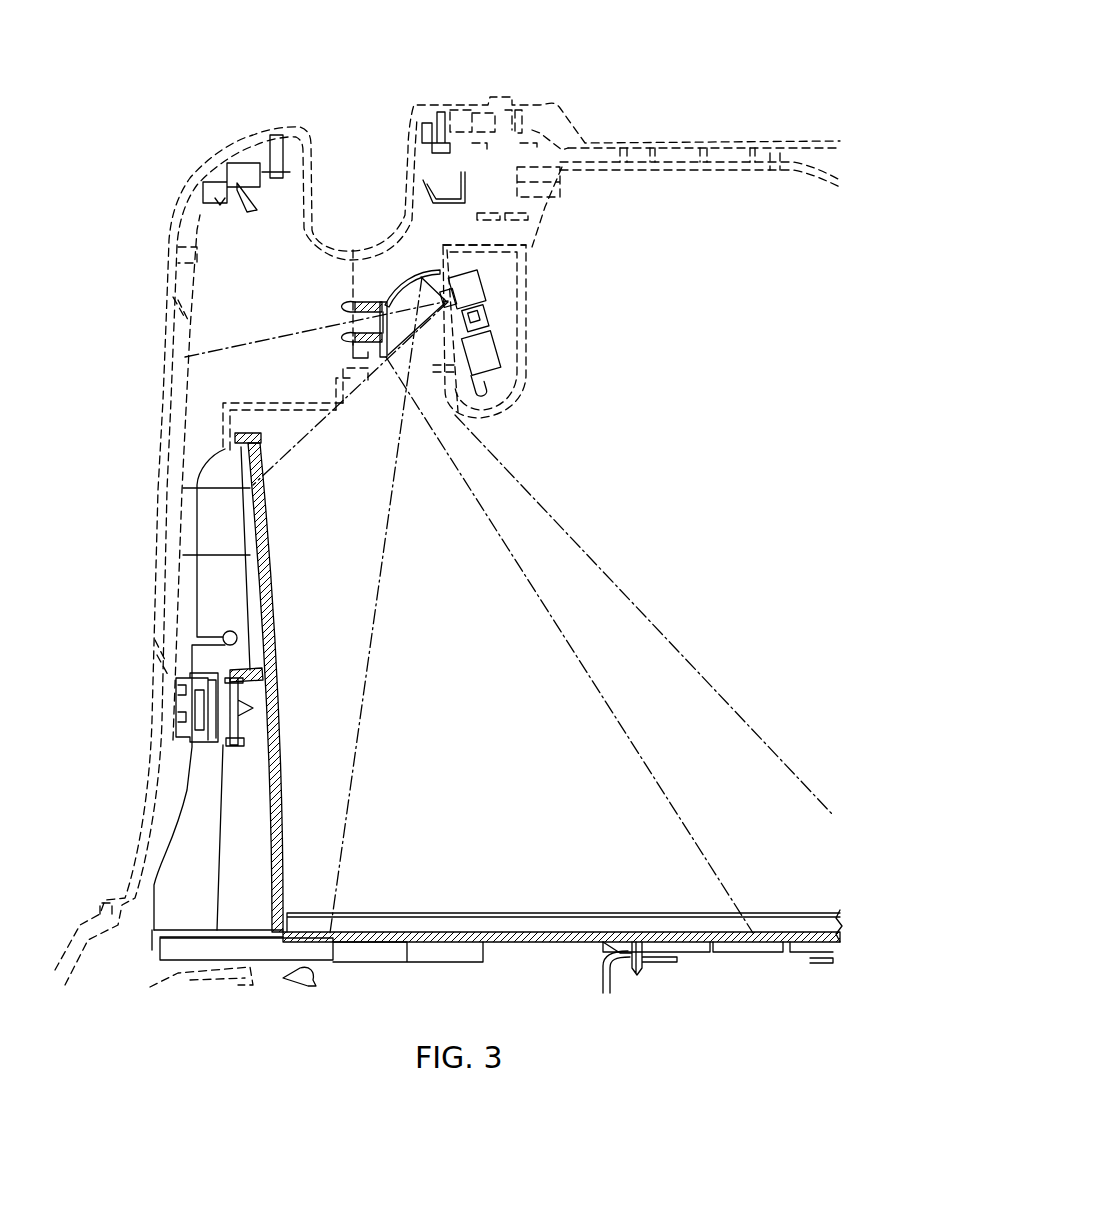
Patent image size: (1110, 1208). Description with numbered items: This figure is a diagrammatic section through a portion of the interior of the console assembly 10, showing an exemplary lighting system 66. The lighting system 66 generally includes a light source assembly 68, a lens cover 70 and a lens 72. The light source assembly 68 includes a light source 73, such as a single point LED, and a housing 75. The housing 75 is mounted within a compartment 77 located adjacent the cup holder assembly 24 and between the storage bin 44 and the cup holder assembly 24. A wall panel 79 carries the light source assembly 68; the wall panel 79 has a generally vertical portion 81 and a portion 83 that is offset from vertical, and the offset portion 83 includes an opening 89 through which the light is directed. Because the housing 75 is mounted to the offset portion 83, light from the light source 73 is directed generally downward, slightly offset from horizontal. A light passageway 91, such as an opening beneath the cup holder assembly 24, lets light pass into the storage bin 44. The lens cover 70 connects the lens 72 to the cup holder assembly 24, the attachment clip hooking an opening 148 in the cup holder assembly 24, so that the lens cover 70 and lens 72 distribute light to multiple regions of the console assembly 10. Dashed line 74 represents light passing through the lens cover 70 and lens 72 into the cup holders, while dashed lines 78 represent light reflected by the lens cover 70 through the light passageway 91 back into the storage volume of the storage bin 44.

The console assembly 10 is at (755, 61).
The cup holder assembly 24 is at (447, 510).
The storage bin 44 is at (700, 151).
The lighting system 66 is at (558, 331).
The light source assembly 68 is at (484, 309).
The lens cover 70 is at (398, 284).
The lens 72 is at (326, 329).
The light source 73 is at (486, 297).
The dashed line 74 is at (272, 345).
The housing 75 is at (486, 305).
The compartment 77 is at (522, 265).
The dashed lines 78 is at (377, 612).
The wall panel 79 is at (457, 357).
The generally vertical portion 81 is at (443, 377).
The offset portion 83 is at (437, 266).
The opening 89 is at (458, 252).
The light passageway 91 is at (350, 393).
The opening 148 is at (348, 303).